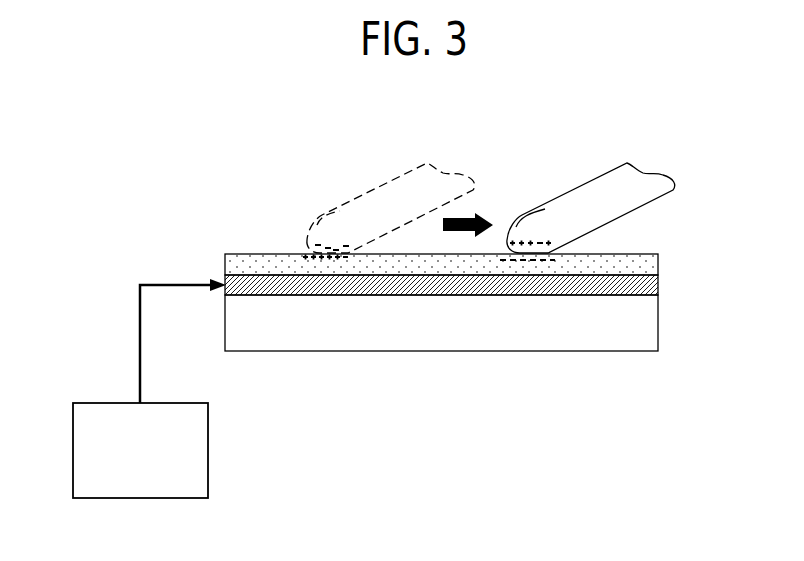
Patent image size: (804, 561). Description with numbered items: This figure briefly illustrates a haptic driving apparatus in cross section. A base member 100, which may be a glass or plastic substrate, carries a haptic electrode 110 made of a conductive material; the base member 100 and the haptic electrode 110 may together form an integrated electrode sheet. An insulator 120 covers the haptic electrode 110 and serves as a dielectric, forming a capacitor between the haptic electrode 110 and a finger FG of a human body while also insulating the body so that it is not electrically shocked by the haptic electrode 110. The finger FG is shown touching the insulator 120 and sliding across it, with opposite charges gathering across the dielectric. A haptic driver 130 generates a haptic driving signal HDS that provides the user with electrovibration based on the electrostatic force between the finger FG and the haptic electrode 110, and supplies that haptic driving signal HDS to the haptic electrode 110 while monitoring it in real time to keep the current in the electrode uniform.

The base member 100 is at (655, 320).
The haptic electrode 110 is at (655, 283).
The insulator 120 is at (655, 262).
The haptic driver 130 is at (124, 465).
The finger FG is at (642, 195).
The haptic driving signal HDS is at (183, 329).